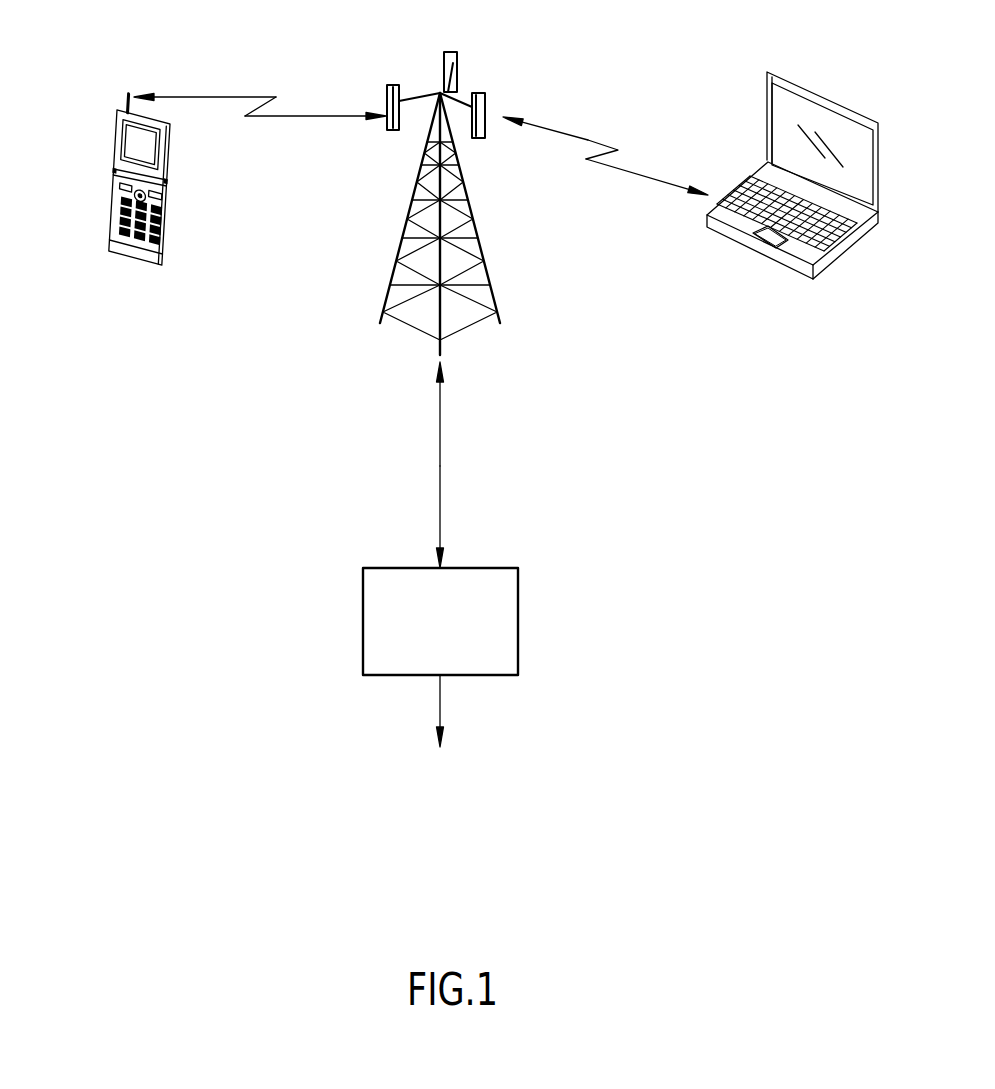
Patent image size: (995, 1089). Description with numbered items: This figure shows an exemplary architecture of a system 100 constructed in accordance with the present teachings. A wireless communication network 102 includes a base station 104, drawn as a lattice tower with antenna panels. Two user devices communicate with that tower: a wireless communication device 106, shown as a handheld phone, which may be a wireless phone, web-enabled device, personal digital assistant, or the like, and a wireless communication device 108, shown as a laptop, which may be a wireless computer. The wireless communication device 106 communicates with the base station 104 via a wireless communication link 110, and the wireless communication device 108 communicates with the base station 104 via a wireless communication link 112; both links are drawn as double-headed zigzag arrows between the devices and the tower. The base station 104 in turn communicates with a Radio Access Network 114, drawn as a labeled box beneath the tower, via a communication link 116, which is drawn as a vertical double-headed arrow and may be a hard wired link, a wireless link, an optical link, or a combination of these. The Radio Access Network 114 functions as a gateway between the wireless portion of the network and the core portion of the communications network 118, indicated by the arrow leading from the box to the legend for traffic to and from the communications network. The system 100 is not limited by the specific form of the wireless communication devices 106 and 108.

The system 100 is at (199, 790).
The wireless communication network 102 is at (156, 566).
The base station 104 is at (483, 250).
The wireless communication device 106 is at (170, 227).
The wireless communication device 108 is at (825, 95).
The wireless communication link 110 is at (240, 97).
The wireless communication link 112 is at (588, 140).
The Radio Access Network 114 is at (518, 630).
The communication link 116 is at (442, 482).
The communications network 118 is at (570, 758).